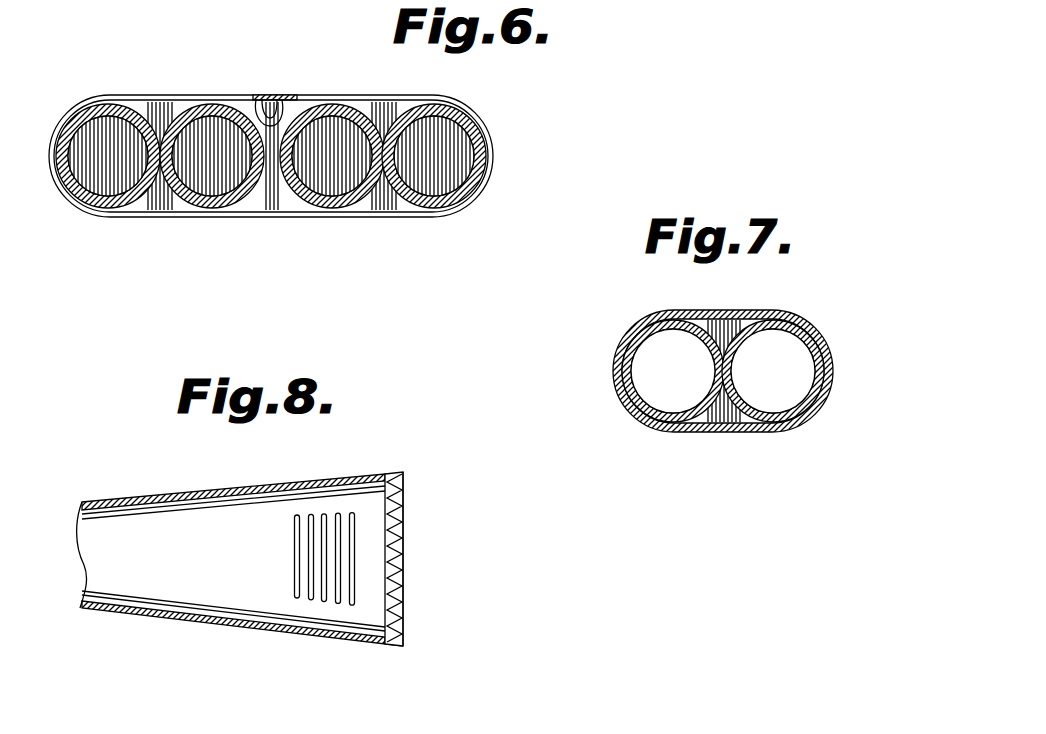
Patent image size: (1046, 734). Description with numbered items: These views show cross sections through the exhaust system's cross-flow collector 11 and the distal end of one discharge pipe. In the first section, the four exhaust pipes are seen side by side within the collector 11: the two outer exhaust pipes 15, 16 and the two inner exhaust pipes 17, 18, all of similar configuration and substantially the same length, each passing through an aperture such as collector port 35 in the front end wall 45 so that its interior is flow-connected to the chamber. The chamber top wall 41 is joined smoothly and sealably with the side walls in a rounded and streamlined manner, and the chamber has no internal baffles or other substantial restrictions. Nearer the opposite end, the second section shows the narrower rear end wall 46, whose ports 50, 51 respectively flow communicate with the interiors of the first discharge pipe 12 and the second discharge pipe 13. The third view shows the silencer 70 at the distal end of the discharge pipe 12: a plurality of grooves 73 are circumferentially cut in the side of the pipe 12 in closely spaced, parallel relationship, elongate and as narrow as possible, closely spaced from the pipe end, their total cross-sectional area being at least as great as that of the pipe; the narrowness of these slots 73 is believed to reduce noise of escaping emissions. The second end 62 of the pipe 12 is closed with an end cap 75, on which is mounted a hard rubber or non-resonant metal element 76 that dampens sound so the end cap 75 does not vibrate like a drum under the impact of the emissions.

In FIG. 6, the cross-flow collector 11 is at (177, 96).
In FIG. 7, the cross-flow collector 11 is at (667, 311).
In FIG. 7, the first discharge pipe 12 is at (807, 343).
In FIG. 8, the first discharge pipe 12 is at (248, 487).
In FIG. 7, the second discharge pipe 13 is at (641, 392).
In FIG. 6, the outer exhaust pipe 15 is at (473, 122).
In FIG. 6, the outer exhaust pipe 16 is at (60, 185).
In FIG. 6, the inner exhaust pipe 17 is at (372, 106).
In FIG. 6, the inner exhaust pipe 18 is at (253, 186).
In FIG. 6, the collector port 35 is at (103, 192).
In FIG. 6, the top wall 41 is at (278, 110).
In FIG. 6, the front end wall 45 is at (293, 204).
In FIG. 7, the rear end wall 46 is at (718, 414).
In FIG. 7, the port 50 is at (775, 414).
In FIG. 7, the port 51 is at (654, 406).
In FIG. 8, the second end 62 is at (386, 474).
In FIG. 8, the silencer 70 is at (347, 619).
In FIG. 8, the grooves 73 is at (323, 567).
In FIG. 8, the end cap 75 is at (395, 573).
In FIG. 8, the element 76 is at (404, 511).